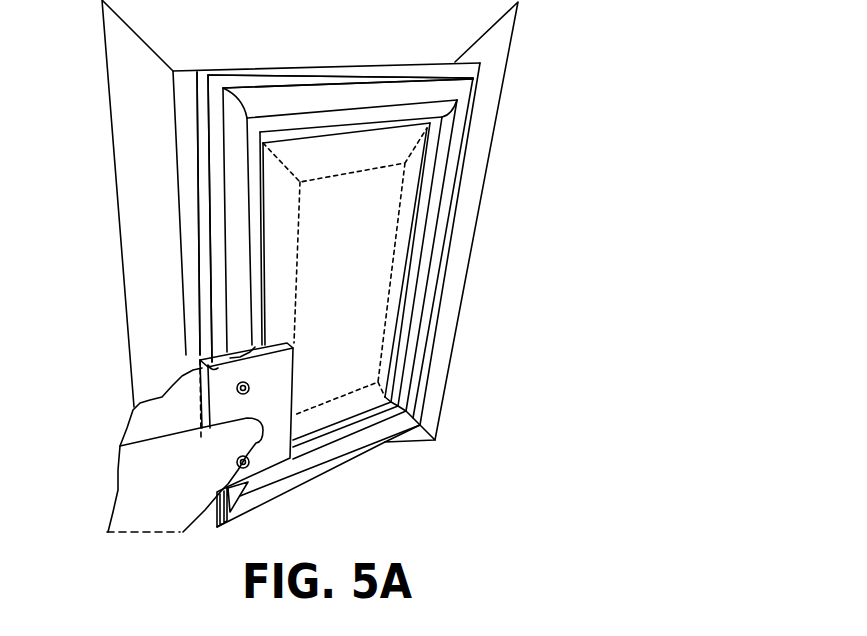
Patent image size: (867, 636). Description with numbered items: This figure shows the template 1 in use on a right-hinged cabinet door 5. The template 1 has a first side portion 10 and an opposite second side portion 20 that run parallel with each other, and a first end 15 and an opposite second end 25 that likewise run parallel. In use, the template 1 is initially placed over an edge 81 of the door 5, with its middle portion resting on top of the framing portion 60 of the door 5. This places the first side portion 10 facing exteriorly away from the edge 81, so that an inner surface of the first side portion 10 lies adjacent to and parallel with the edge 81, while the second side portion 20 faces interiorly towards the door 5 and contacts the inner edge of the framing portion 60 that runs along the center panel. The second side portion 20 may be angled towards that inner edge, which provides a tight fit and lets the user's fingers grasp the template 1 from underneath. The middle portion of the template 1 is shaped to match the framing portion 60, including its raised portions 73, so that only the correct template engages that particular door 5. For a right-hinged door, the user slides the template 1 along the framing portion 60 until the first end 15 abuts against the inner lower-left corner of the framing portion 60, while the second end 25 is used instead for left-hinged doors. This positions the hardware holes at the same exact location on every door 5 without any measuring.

The template 1 is at (297, 412).
The door 5 is at (380, 235).
The first side portion 10 is at (215, 436).
The first end 15 is at (270, 472).
The second side portion 20 is at (295, 380).
The second end 25 is at (230, 358).
The framing portion 60 is at (227, 250).
The raised portions 73 is at (230, 292).
The edge 81 is at (193, 157).